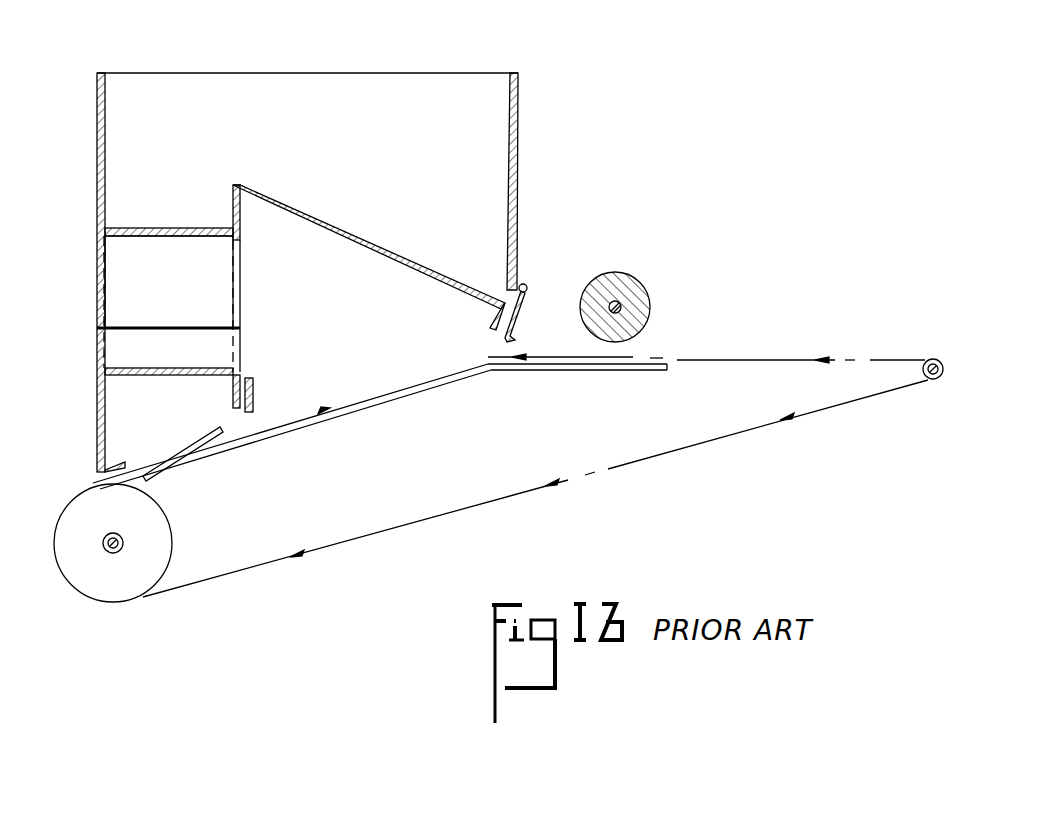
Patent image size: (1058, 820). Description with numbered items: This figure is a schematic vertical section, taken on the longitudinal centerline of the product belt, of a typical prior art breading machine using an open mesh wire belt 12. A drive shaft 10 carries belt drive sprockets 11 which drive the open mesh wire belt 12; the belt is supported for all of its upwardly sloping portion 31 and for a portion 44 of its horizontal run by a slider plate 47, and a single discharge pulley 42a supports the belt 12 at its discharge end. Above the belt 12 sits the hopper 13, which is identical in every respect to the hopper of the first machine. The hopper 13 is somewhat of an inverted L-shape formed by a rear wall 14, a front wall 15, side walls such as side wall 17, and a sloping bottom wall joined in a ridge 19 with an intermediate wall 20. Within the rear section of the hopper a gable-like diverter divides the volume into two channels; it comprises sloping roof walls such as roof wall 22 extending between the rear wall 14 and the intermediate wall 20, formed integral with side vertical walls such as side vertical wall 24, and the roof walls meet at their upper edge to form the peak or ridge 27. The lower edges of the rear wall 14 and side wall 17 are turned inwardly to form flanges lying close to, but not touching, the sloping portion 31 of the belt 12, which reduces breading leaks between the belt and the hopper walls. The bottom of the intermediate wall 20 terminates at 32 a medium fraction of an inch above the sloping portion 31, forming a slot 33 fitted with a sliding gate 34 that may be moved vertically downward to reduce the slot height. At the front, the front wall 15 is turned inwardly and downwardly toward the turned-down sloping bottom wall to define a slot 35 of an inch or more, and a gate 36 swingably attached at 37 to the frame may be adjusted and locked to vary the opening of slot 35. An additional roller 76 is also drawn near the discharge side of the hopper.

The drive shaft 10 is at (112, 552).
The belt drive sprockets 11 is at (172, 540).
The open mesh wire belt 12 is at (236, 543).
The hopper 13 is at (478, 58).
The rear wall 14 is at (97, 116).
The front wall 15 is at (518, 136).
The side wall 17 is at (410, 100).
The ridge 19 is at (236, 183).
The intermediate wall 20 is at (240, 296).
The sloping roof wall 22 is at (138, 292).
The side vertical wall 24 is at (145, 352).
The peak or ridge 27 is at (168, 228).
The upwardly sloping portion of the upper product belt run 31 is at (362, 392).
The bottom of the intermediate wall 32 is at (233, 408).
The slot 33 is at (228, 422).
The sliding gate 34 is at (256, 382).
The slot 35 is at (498, 306).
The gate 36 is at (518, 315).
The pivot attachment 37 is at (528, 285).
The discharge pulley 42a is at (928, 382).
The horizontal run portion 44 is at (716, 360).
The slider plate 47 is at (524, 372).
The pressure roller 76 is at (632, 285).